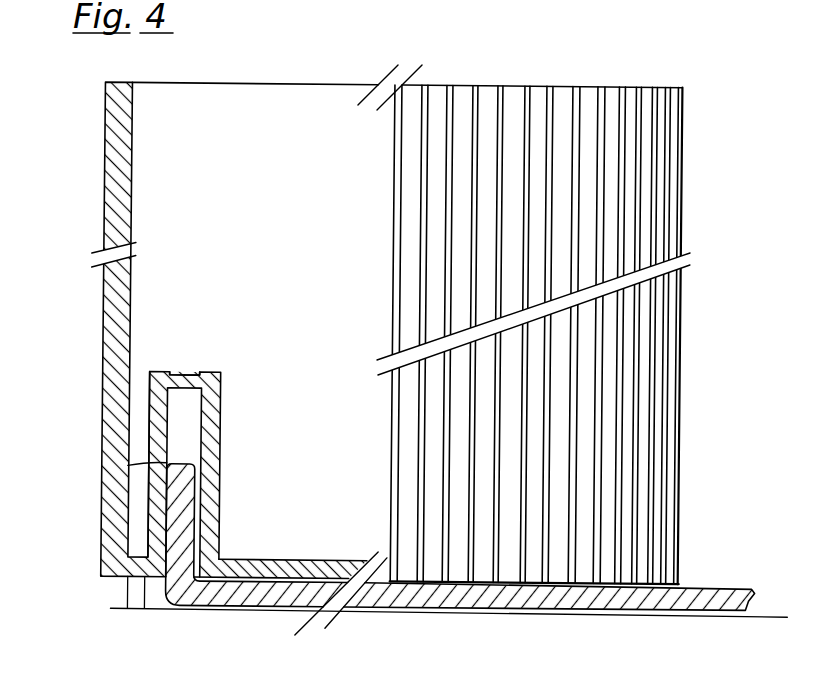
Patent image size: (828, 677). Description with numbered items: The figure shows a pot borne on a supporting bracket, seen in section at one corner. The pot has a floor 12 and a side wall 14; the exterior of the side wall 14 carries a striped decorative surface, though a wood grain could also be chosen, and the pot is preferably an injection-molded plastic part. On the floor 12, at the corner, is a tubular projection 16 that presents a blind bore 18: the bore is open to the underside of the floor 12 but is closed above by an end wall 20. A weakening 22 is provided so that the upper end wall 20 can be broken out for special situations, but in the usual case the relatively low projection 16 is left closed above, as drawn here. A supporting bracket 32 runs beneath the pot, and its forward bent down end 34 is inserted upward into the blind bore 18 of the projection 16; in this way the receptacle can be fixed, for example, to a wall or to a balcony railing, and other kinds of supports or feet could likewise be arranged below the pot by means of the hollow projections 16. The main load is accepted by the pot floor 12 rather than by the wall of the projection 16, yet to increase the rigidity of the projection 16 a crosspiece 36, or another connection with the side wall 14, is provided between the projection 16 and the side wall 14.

The floor 12 is at (309, 563).
The side wall 14 is at (119, 271).
The projection 16 is at (227, 434).
The blind bore 18 is at (190, 407).
The end wall 20 is at (178, 374).
The weakening 22 is at (204, 374).
The supporting bracket 32 is at (710, 601).
The bent down end 34 is at (183, 547).
The crosspiece 36 is at (136, 500).